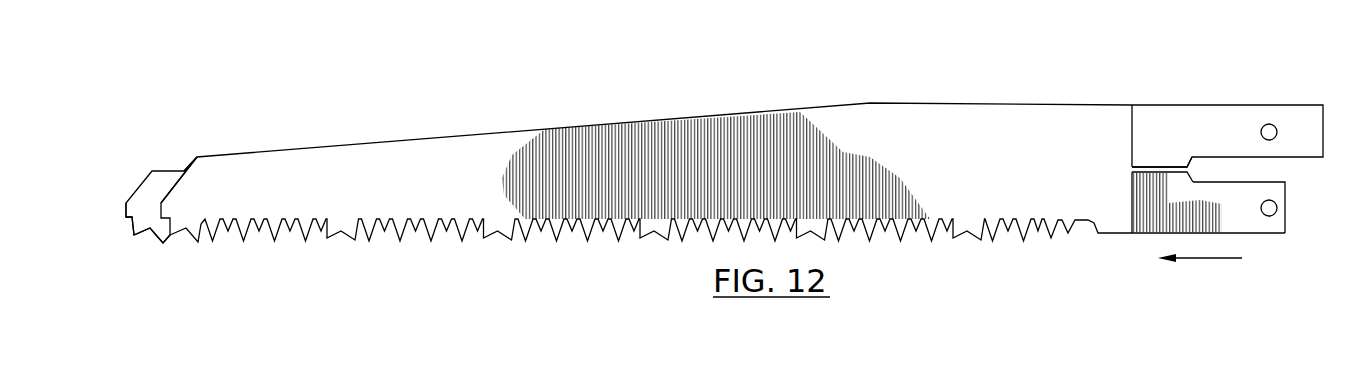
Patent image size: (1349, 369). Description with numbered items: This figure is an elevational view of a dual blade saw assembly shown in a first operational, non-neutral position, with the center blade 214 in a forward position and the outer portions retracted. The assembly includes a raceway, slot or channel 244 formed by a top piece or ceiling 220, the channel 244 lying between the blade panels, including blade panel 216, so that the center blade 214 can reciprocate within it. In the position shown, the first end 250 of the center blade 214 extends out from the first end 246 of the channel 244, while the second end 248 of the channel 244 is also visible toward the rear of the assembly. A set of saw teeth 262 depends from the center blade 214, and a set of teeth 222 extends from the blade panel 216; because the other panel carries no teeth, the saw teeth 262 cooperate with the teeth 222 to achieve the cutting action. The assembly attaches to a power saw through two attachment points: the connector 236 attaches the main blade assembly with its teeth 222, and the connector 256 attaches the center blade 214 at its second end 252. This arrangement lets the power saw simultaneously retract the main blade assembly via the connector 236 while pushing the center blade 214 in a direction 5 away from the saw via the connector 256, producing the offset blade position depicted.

The center blade 214 is at (145, 192).
The channel 244 is at (183, 165).
The first end of the channel 246 is at (197, 157).
The blade panel 216 is at (222, 164).
The first end of the center blade 250 is at (124, 217).
The saw teeth 262 is at (145, 240).
The teeth 222 is at (180, 240).
The top piece 220 is at (1220, 117).
The attachment point 236 is at (1272, 124).
The second end of the channel 248 is at (1160, 167).
The second end of the center blade 252 is at (1285, 208).
The attachment point 256 is at (1270, 216).
The direction 5 is at (1200, 262).